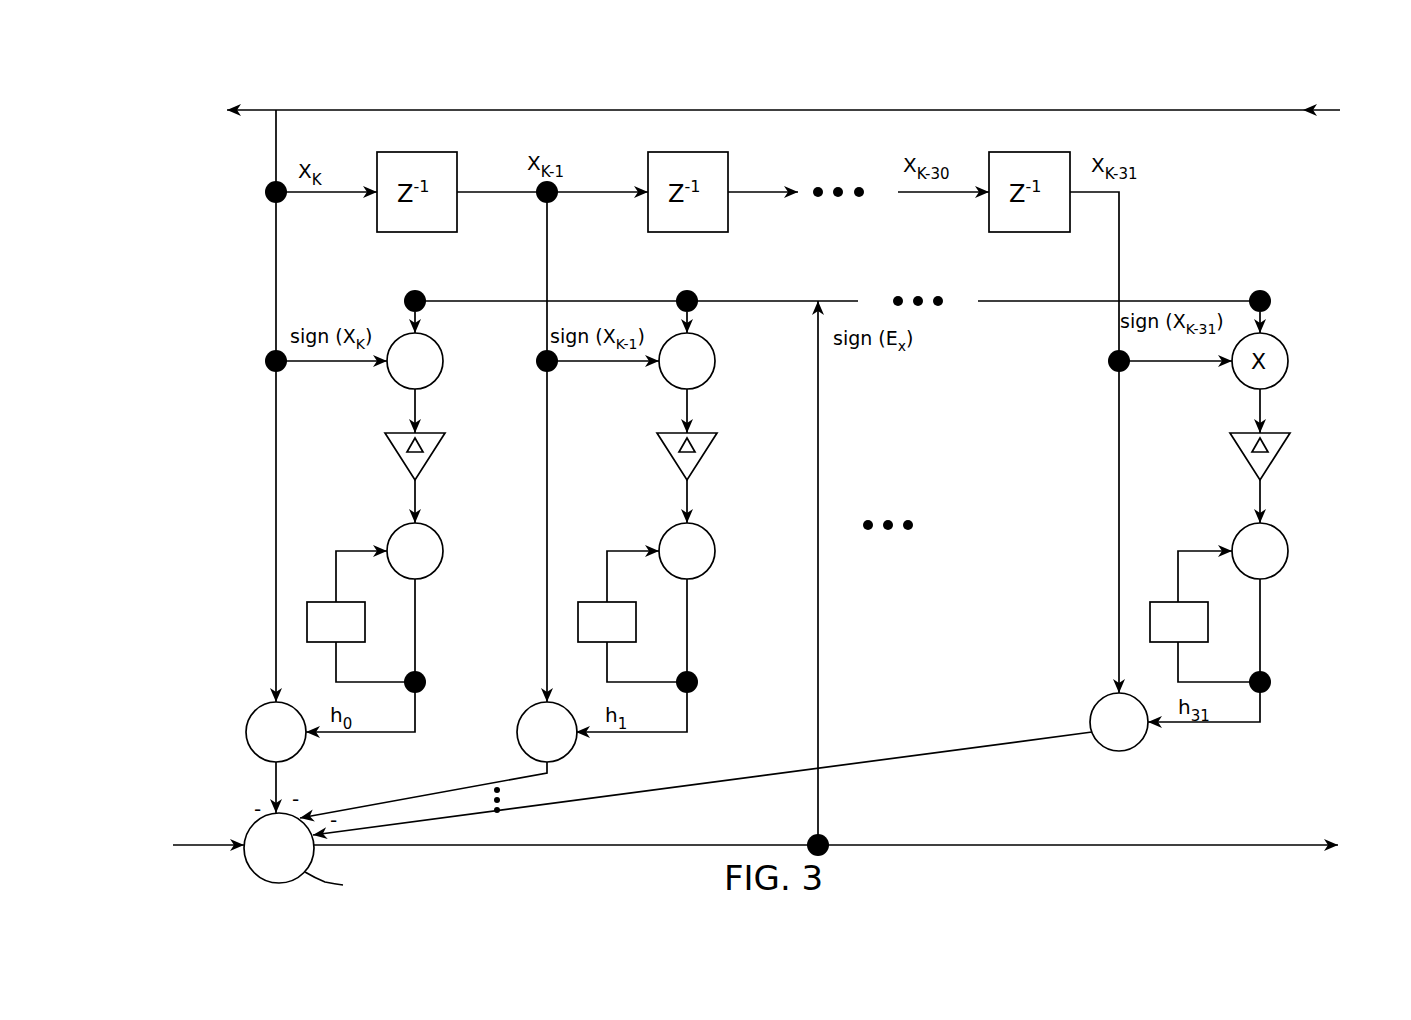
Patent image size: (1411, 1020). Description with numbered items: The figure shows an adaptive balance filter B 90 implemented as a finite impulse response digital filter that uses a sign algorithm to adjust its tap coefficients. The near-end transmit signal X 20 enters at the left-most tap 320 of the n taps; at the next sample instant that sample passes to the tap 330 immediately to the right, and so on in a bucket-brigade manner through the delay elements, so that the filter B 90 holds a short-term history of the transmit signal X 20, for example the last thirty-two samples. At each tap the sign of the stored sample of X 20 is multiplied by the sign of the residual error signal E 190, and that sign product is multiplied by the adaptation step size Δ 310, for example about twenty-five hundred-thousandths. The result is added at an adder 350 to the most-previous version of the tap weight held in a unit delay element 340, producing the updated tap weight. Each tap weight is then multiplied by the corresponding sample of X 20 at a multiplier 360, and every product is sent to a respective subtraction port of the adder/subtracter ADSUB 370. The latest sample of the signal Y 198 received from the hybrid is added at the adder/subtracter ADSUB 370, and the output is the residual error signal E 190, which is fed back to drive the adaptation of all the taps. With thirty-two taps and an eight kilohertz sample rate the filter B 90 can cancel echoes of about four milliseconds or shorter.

The adaptive balance filter B 90 is at (1176, 91).
The near-end transmit signal X 20 is at (1340, 110).
The left-most tap 320 is at (443, 364).
The tap 330 is at (715, 364).
The adaptation step size Δ 310 is at (435, 448).
The adder 350 is at (443, 556).
The z-1 delay element 340 is at (310, 602).
The multiplier 360 is at (256, 712).
The adder/subtracter ADSUB 370 is at (252, 820).
The signal Y 198 is at (199, 845).
The residual error signal E 190 is at (1298, 845).